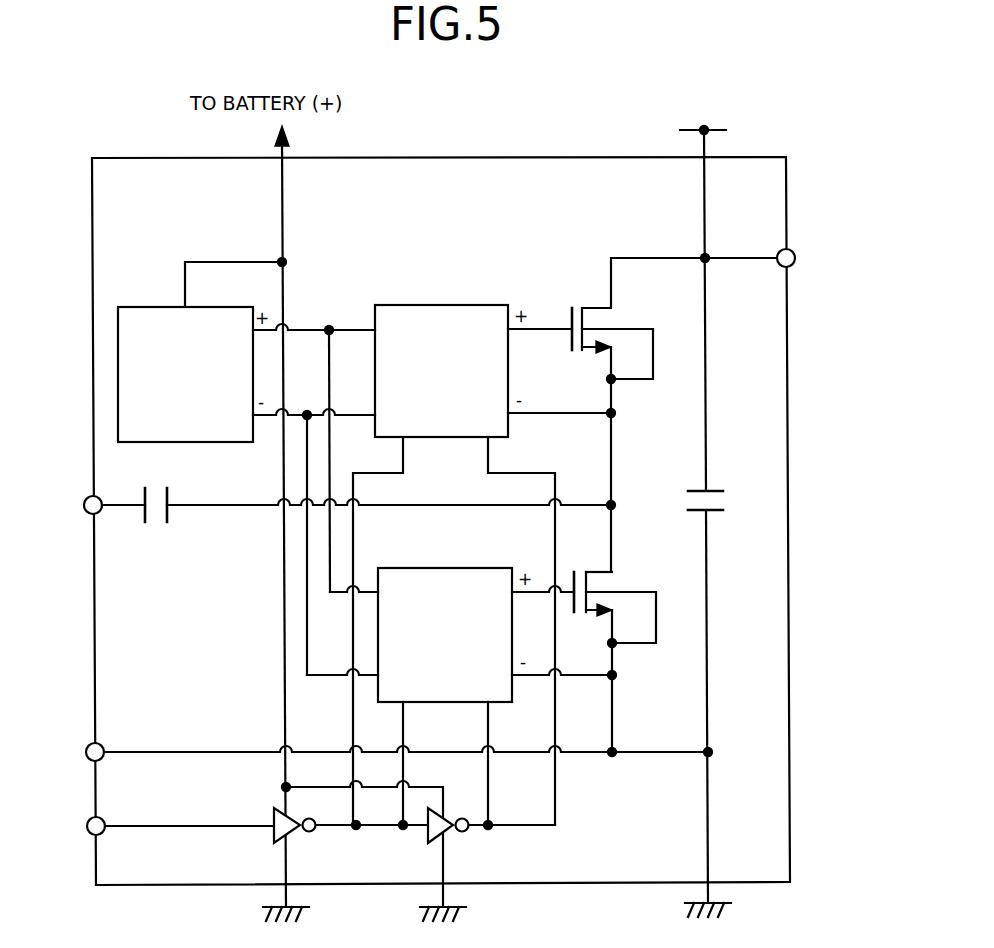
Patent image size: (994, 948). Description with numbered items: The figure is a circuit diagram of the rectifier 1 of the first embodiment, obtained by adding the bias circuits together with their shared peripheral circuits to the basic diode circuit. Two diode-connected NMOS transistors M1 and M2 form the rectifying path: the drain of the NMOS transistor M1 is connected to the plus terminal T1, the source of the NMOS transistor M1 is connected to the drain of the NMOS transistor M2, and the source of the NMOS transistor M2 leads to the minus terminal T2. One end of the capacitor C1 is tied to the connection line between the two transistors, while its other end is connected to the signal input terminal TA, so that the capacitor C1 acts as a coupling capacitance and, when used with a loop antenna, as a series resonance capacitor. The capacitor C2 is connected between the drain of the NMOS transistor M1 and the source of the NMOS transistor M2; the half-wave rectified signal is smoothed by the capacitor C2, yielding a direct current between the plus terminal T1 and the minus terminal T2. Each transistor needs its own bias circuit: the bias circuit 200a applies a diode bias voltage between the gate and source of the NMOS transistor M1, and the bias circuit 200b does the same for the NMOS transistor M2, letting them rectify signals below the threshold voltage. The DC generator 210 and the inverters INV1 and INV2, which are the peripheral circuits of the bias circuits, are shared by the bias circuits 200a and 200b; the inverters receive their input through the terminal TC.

The rectifier 1 is at (790, 590).
The DC generator 210 is at (133, 305).
The bias circuit 200a is at (441, 305).
The bias circuit 200b is at (443, 568).
The NMOS transistor M1 is at (610, 318).
The NMOS transistor M2 is at (612, 580).
The capacitor C1 is at (157, 525).
The capacitor C2 is at (724, 500).
The plus terminal T1 is at (796, 258).
The minus terminal T2 is at (86, 753).
The signal input terminal TA is at (84, 505).
The terminal TC is at (87, 826).
The inverter INV1 is at (300, 833).
The inverter INV2 is at (455, 833).